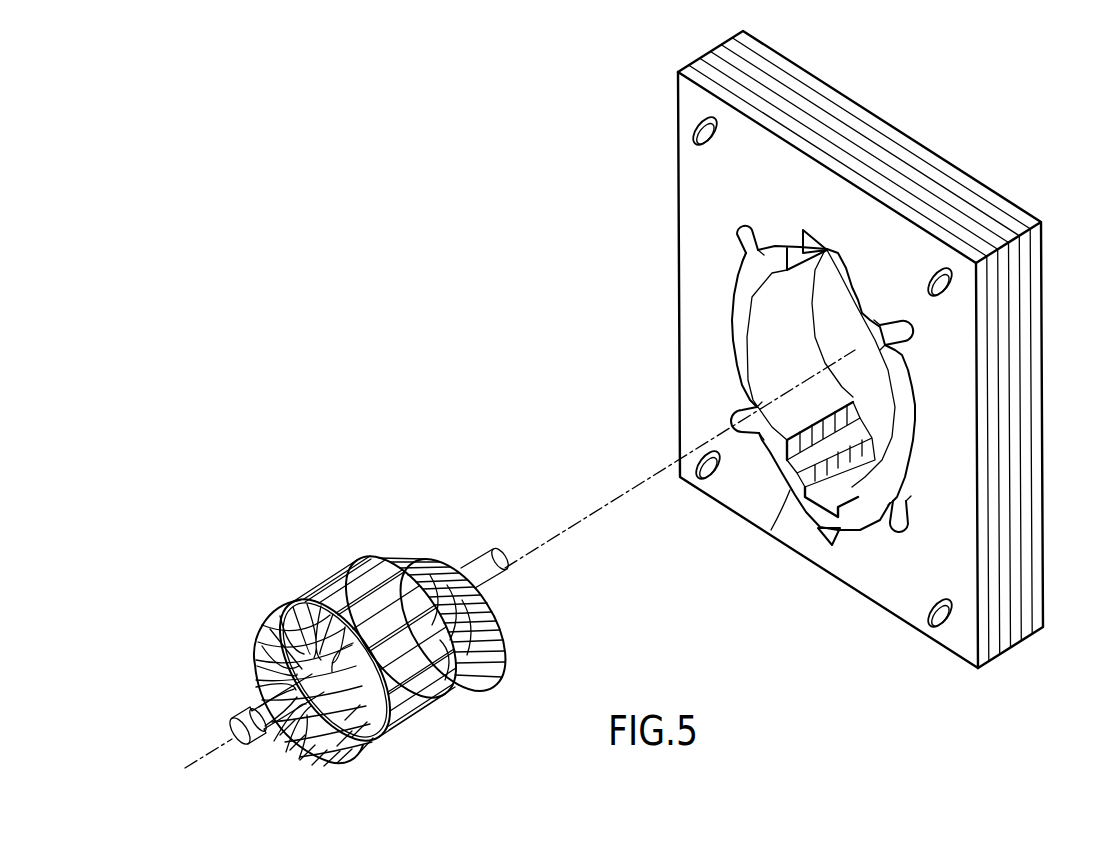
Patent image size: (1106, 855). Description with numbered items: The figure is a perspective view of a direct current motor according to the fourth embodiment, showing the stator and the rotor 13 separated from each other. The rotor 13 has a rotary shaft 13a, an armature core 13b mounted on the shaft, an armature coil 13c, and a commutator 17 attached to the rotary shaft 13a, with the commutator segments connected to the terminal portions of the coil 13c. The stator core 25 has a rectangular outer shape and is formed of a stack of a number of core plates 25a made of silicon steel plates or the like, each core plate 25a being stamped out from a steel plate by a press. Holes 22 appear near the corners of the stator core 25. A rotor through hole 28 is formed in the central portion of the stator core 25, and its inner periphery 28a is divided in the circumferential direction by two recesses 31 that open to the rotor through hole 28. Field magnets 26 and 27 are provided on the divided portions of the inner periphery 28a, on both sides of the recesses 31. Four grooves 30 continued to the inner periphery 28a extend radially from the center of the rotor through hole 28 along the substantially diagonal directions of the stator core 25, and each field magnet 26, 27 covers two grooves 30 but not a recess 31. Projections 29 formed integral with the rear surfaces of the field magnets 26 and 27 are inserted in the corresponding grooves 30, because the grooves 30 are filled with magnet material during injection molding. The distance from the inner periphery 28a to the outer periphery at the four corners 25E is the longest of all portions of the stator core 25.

The rotor 13 is at (292, 604).
The rotary shaft 13a is at (250, 725).
The armature core 13b is at (410, 688).
The coil 13c is at (258, 628).
The commutator 17 is at (490, 612).
The mounting holes 22 is at (694, 136).
The stator core 25 is at (680, 372).
The corners 25E is at (690, 98).
The core plates 25a is at (982, 667).
The field magnet 26 is at (735, 320).
The field magnet 27 is at (905, 468).
The rotor through hole 28 is at (880, 405).
The inner periphery 28a is at (778, 522).
The projections 29 is at (745, 232).
The grooves 30 is at (738, 248).
The recesses 31 is at (832, 238).